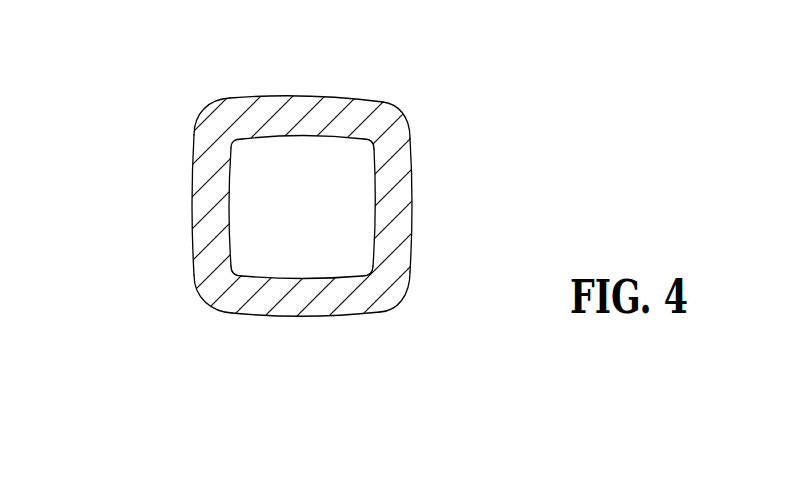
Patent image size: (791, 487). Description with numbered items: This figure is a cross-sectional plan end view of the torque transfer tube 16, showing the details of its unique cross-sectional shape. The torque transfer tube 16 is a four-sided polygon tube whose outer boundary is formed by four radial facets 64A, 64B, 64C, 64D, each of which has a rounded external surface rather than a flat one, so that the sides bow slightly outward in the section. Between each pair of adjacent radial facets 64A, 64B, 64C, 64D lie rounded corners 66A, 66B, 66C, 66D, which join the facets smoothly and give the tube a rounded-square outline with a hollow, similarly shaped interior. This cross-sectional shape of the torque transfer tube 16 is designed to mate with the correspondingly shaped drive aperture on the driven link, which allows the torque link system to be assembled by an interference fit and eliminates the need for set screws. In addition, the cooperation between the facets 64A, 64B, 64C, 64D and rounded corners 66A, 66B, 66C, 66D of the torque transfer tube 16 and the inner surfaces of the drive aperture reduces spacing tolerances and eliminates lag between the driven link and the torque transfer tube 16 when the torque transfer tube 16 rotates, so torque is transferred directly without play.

The torque transfer tube 16 is at (108, 161).
The radial facet 64A is at (292, 96).
The radial facet 64B is at (411, 198).
The radial facet 64C is at (292, 318).
The radial facet 64D is at (193, 218).
The rounded corner 66A is at (207, 117).
The rounded corner 66B is at (401, 118).
The rounded corner 66C is at (398, 301).
The rounded corner 66D is at (204, 302).